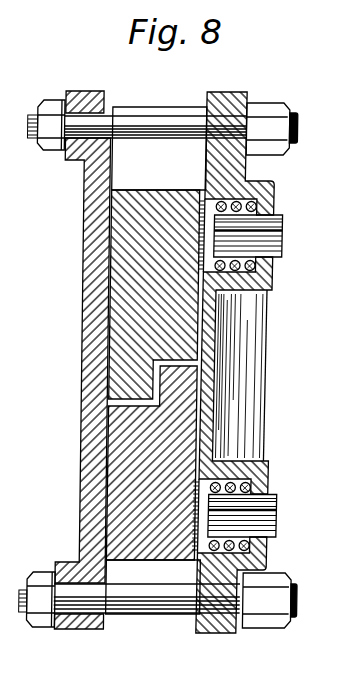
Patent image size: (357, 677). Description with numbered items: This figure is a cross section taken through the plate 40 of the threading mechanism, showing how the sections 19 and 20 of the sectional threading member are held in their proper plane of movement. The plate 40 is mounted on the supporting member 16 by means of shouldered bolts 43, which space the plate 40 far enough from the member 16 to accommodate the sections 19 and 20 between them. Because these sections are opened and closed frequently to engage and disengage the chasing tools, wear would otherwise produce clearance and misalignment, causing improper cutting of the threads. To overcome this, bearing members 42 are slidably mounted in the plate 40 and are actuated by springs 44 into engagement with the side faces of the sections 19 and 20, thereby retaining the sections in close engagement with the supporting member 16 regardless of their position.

The supporting member 16 is at (87, 258).
The section 19 is at (139, 203).
The section 20 is at (142, 540).
The plate 40 is at (222, 345).
The bearing member 42 is at (278, 245).
The shouldered bolt 43 is at (137, 113).
The spring 44 is at (275, 201).